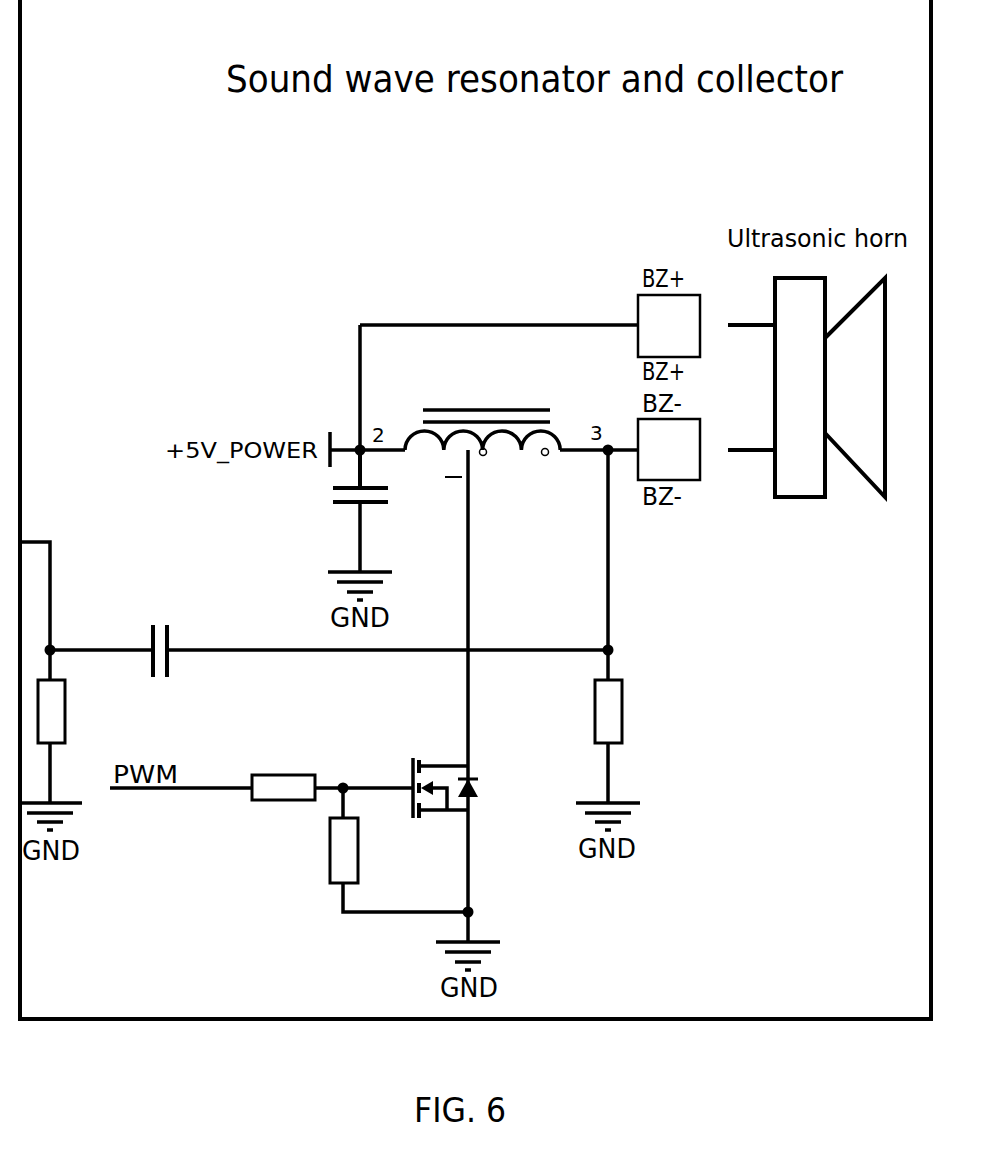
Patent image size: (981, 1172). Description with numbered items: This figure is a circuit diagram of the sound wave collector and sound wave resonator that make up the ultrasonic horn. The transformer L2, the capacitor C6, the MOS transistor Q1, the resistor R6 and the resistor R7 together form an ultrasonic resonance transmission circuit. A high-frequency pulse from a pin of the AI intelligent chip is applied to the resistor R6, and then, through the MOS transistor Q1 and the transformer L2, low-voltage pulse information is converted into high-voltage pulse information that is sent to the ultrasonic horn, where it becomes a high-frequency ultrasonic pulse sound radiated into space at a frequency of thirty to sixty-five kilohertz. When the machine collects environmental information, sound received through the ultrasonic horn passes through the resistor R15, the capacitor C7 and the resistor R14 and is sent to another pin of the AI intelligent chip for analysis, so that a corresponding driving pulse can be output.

The transformer L2 is at (483, 410).
The capacitor C6 is at (381, 494).
The capacitor C7 is at (161, 651).
The resistor R14 is at (83, 711).
The resistor R15 is at (640, 711).
The resistor R6 is at (282, 789).
The resistor R7 is at (368, 850).
The MOS transistor Q1 is at (467, 787).